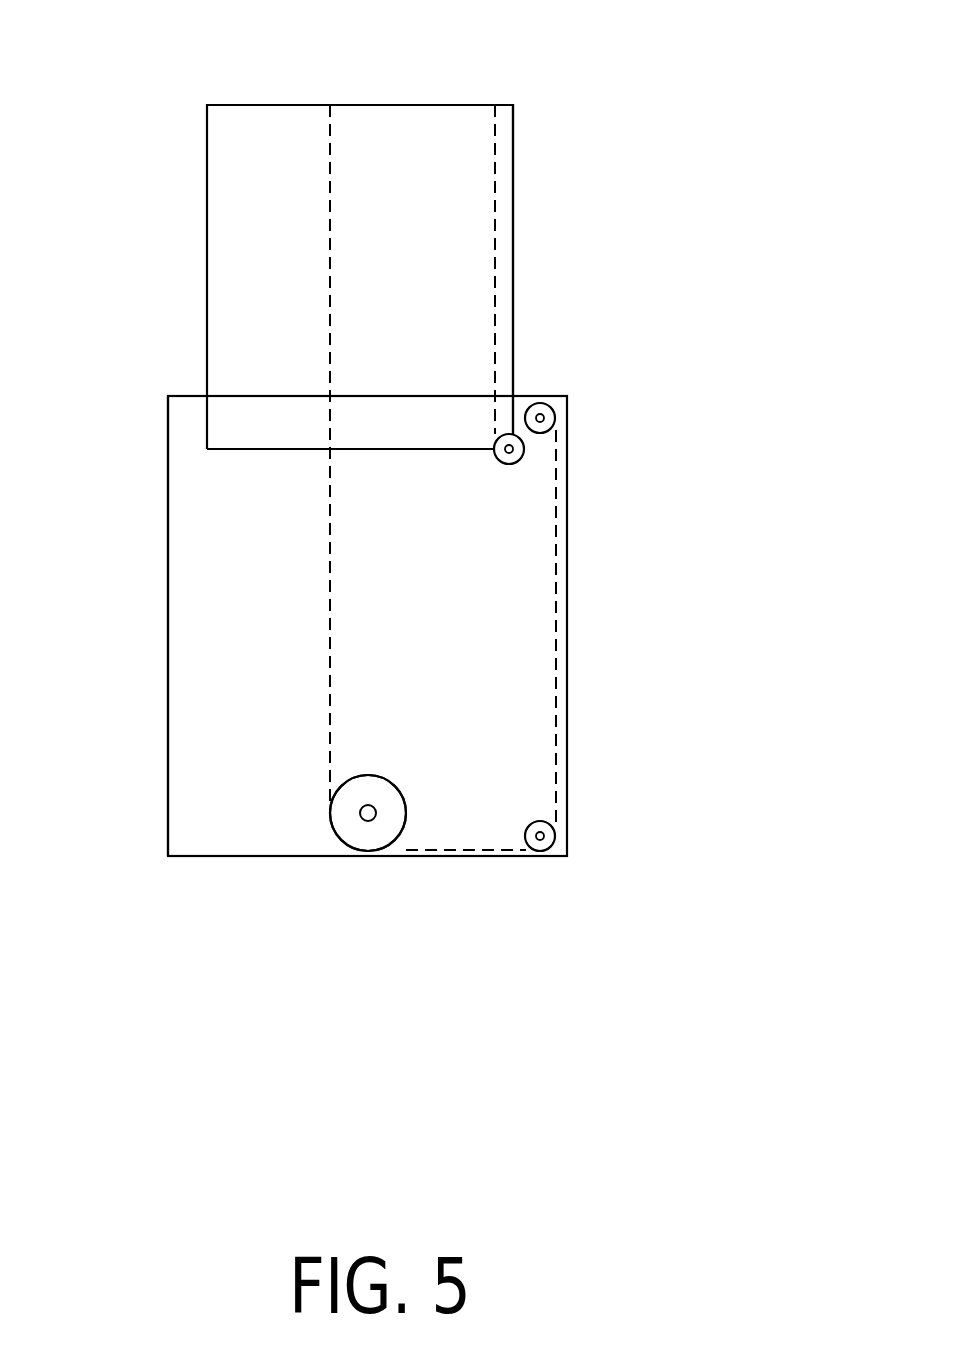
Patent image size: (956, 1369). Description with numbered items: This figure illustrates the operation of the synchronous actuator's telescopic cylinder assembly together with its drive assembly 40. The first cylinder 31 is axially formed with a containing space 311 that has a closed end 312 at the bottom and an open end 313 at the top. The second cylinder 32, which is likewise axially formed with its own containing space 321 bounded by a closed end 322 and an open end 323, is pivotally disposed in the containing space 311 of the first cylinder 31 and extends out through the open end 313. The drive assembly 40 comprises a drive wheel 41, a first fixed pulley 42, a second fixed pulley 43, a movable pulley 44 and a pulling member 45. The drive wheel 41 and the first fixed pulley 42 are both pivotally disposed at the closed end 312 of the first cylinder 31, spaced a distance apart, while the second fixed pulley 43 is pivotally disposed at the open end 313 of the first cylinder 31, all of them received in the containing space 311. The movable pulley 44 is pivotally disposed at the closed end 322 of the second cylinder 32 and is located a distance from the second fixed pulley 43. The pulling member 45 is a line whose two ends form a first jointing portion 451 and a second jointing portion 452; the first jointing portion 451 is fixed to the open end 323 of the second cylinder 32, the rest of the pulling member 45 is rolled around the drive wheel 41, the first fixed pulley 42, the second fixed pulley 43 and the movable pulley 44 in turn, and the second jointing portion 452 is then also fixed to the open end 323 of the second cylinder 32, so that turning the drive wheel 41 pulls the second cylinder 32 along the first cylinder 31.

The first cylinder 31 is at (167, 586).
The containing space 311 is at (223, 628).
The closed end 312 is at (480, 857).
The open end 313 is at (237, 393).
The second cylinder 32 is at (513, 267).
The containing space 321 is at (428, 238).
The closed end 322 is at (237, 450).
The open end 323 is at (399, 112).
The drive assembly 40 is at (312, 816).
The drive wheel 41 is at (362, 833).
The first fixed pulley 42 is at (541, 837).
The second fixed pulley 43 is at (540, 418).
The movable pulley 44 is at (508, 458).
The pulling member 45 is at (565, 470).
The first jointing portion 451 is at (330, 103).
The second jointing portion 452 is at (495, 103).